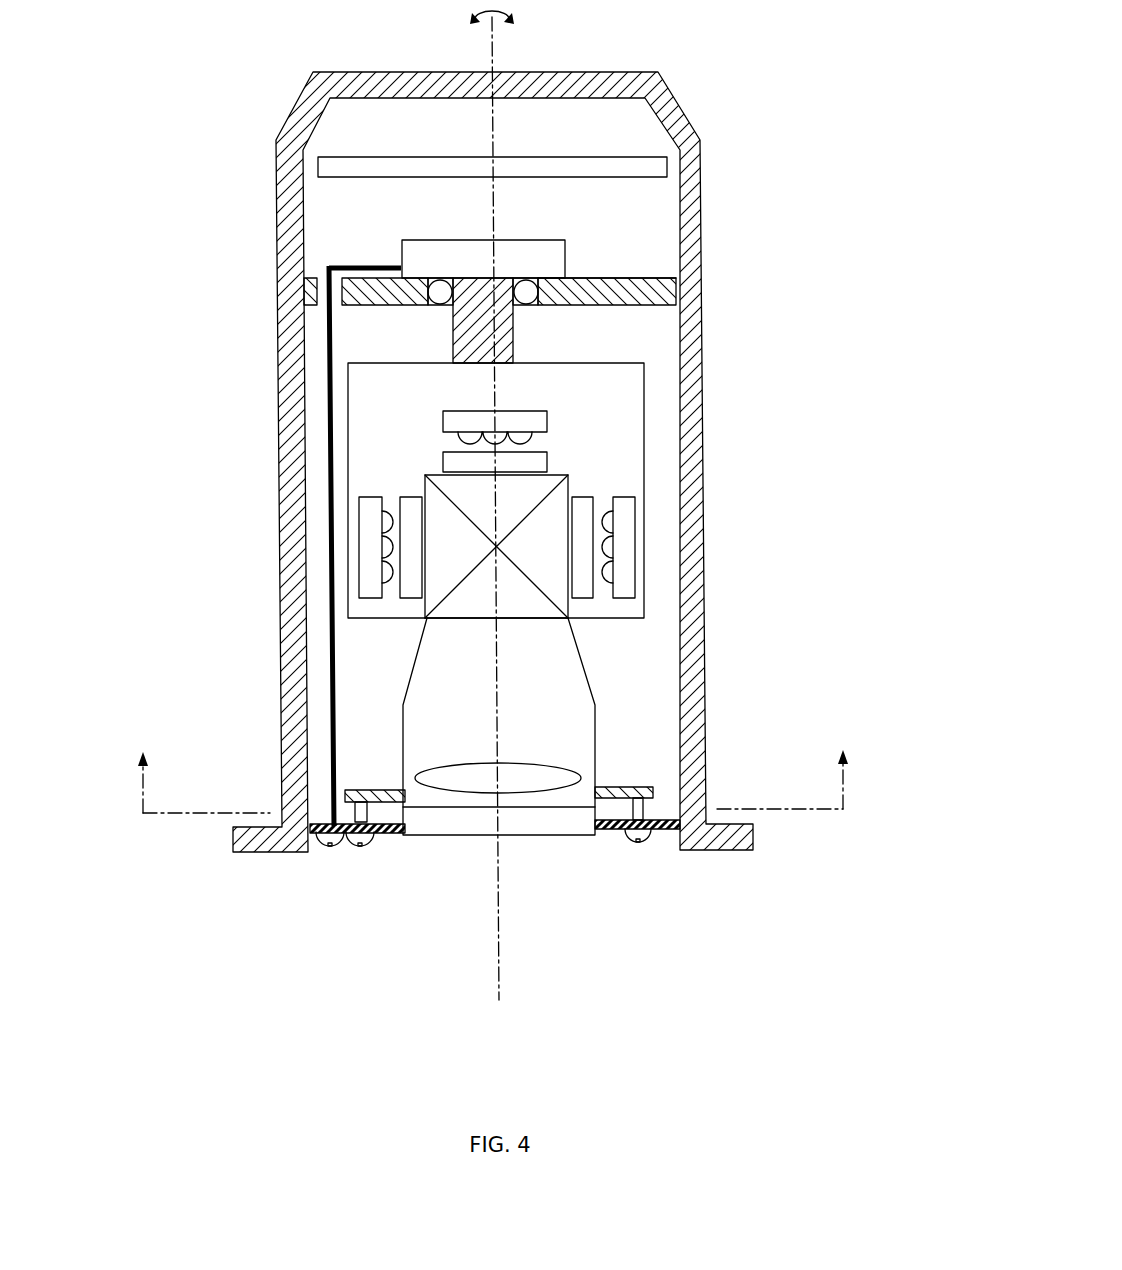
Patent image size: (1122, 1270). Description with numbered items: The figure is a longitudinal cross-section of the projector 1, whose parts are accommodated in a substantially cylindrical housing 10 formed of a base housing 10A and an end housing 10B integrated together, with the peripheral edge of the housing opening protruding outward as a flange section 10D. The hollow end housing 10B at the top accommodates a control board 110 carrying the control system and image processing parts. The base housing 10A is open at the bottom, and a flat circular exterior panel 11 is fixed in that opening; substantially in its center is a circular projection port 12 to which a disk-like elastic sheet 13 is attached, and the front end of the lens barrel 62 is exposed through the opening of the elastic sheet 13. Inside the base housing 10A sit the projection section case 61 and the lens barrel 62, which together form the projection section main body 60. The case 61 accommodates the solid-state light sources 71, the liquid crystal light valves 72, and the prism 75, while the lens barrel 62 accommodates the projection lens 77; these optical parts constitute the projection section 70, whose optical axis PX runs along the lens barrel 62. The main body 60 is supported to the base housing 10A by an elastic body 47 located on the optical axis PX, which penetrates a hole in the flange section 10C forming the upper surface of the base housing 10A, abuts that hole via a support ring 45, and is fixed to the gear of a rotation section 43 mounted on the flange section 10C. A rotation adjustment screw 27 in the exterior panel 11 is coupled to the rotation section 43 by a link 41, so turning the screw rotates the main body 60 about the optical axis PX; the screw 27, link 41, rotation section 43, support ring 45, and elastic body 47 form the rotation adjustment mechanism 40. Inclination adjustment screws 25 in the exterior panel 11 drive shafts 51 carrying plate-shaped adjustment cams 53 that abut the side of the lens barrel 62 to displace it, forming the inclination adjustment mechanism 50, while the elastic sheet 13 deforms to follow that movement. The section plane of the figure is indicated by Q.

The projector 1 is at (494, 467).
The housing 10 is at (539, 498).
The base housing 10A is at (698, 303).
The end housing 10B is at (694, 172).
The flange section 10C is at (620, 278).
The flange section 10D is at (258, 853).
The control board 110 is at (600, 160).
The rotation adjustment mechanism 40 is at (419, 505).
The link 41 is at (334, 666).
The rotation section 43 is at (548, 240).
The support ring 45 is at (440, 300).
The elastic body 47 is at (515, 352).
The inclination adjustment mechanism 50 is at (443, 749).
The shaft 51 is at (361, 805).
The adjustment cam 53 is at (386, 790).
The projection section main body 60 is at (594, 634).
The projection section case 61 is at (645, 476).
The lens barrel 62 is at (592, 660).
The projection section 70 is at (555, 490).
The solid-state light source 71 is at (476, 411).
The liquid crystal light valve 72 is at (443, 463).
The prism 75 is at (556, 475).
The projection lens 77 is at (456, 770).
The exterior panel 11 is at (316, 834).
The projection port 12 is at (531, 856).
The elastic sheet 13 is at (397, 834).
The inclination adjustment screw 25 is at (360, 847).
The rotation adjustment screw 27 is at (332, 847).
The optical axis PX is at (500, 992).
The section line Q is at (493, 770).